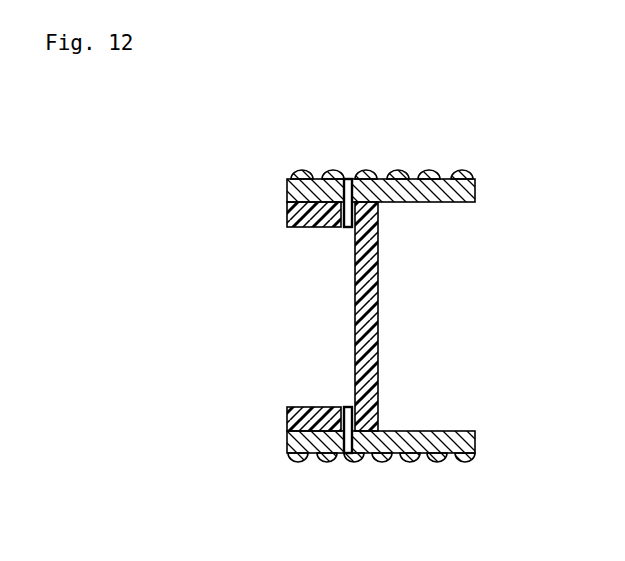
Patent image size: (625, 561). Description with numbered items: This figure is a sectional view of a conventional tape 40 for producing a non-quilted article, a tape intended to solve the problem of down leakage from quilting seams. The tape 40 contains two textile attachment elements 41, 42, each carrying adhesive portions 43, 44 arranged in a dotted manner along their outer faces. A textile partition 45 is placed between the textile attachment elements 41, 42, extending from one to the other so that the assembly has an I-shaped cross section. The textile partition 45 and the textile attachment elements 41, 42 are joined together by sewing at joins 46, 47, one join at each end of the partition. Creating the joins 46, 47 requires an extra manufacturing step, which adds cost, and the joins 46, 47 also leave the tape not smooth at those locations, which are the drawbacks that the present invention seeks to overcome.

The tape for producing a non-quilted article 40 is at (430, 136).
The textile attachment element 41 is at (475, 190).
The textile attachment element 42 is at (475, 437).
The adhesive portion 43 is at (436, 170).
The adhesive portion 44 is at (437, 462).
The textile partition 45 is at (372, 320).
The join 46 is at (350, 179).
The join 47 is at (345, 455).